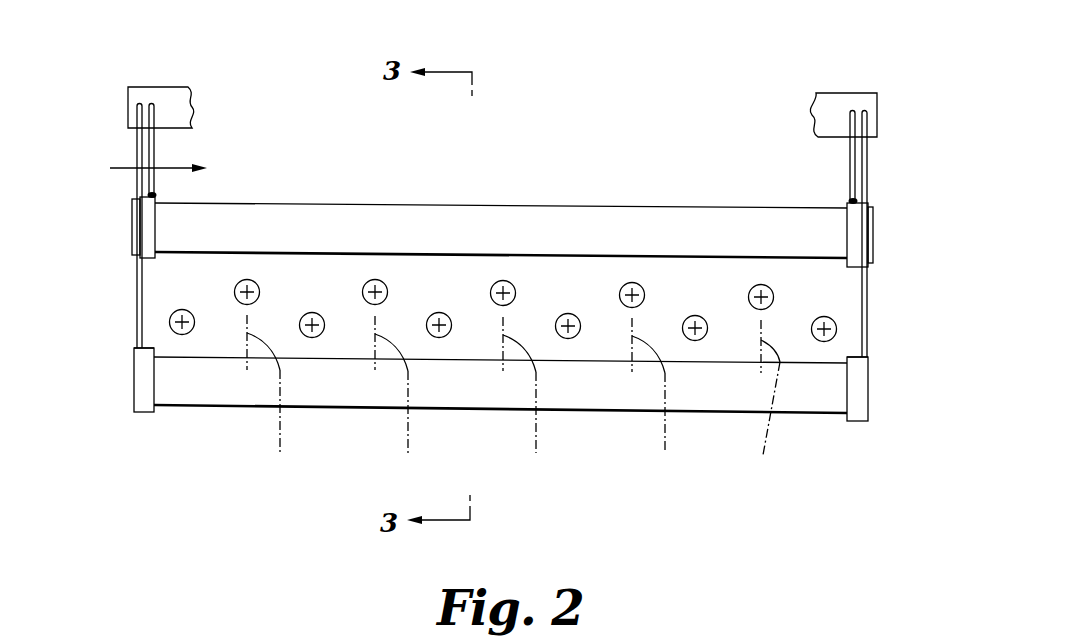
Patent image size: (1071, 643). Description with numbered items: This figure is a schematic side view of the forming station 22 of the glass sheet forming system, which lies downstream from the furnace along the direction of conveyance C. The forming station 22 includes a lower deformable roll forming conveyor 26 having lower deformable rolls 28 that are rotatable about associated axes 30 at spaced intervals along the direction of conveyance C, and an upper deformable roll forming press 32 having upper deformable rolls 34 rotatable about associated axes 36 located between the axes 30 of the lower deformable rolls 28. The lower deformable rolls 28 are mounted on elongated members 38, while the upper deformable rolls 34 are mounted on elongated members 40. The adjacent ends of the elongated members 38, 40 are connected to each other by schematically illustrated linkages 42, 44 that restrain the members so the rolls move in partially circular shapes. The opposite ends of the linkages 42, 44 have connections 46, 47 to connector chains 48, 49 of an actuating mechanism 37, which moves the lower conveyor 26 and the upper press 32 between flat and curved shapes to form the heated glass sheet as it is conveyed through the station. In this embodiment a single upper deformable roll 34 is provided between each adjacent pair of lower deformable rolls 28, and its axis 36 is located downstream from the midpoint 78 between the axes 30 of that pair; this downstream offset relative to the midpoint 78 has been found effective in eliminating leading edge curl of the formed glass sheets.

The forming station 22 is at (590, 110).
The lower deformable roll forming conveyor 26 is at (150, 322).
The lower deformable rolls 28 is at (182, 335).
The axes of lower deformable rolls 30 is at (184, 324).
The upper deformable roll forming press 32 is at (800, 301).
The upper deformable rolls 34 is at (257, 284).
The axes of upper deformable rolls 36 is at (238, 284).
The actuating mechanism 37 is at (856, 81).
The elongated members 38 is at (383, 398).
The elongated members 40 is at (308, 205).
The linkage 42 is at (143, 410).
The linkage 44 is at (132, 222).
The connection 46 is at (135, 346).
The connection 47 is at (153, 196).
The connector chain 48 is at (137, 263).
The connector chain 49 is at (151, 148).
The midpoint 78 is at (513, 398).
The direction of conveyance C is at (177, 168).